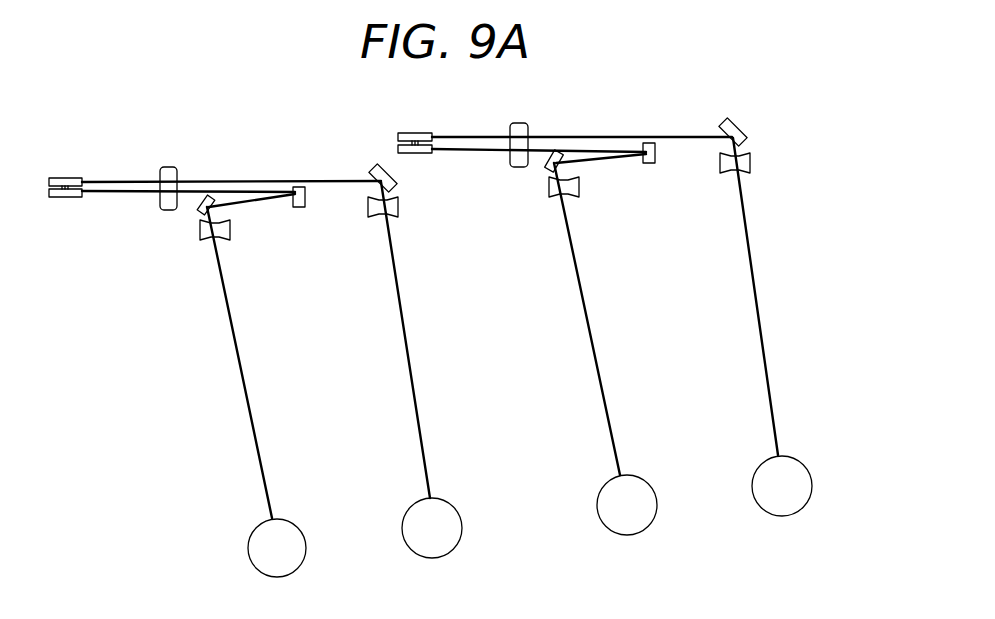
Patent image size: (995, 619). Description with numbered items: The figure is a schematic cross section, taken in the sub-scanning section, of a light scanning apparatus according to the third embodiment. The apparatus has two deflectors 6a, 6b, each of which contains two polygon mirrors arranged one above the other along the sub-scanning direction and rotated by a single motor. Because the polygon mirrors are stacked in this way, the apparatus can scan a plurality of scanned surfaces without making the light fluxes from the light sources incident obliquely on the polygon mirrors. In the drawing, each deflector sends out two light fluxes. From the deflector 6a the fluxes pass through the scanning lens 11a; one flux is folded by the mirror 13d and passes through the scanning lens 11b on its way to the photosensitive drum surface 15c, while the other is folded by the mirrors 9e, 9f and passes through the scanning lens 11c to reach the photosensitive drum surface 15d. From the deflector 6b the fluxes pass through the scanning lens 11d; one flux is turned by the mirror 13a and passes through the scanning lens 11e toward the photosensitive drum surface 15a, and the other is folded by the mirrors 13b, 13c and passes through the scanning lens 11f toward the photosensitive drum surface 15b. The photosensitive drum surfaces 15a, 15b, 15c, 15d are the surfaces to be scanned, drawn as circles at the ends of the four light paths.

The deflector 6a is at (76, 178).
The deflector 6b is at (418, 133).
The mirror 9e is at (299, 207).
The mirror 9f is at (198, 208).
The scanning lens 11a is at (171, 167).
The scanning lens 11b is at (398, 207).
The scanning lens 11c is at (230, 230).
The scanning lens 11d is at (523, 123).
The scanning lens 11e is at (750, 163).
The scanning lens 11f is at (580, 187).
The mirror 13a is at (732, 124).
The mirror 13b is at (656, 157).
The mirror 13c is at (548, 165).
The mirror 13d is at (373, 170).
The photosensitive drum surface 15a is at (792, 466).
The photosensitive drum surface 15b is at (638, 487).
The photosensitive drum surface 15c is at (445, 510).
The photosensitive drum surface 15d is at (287, 530).